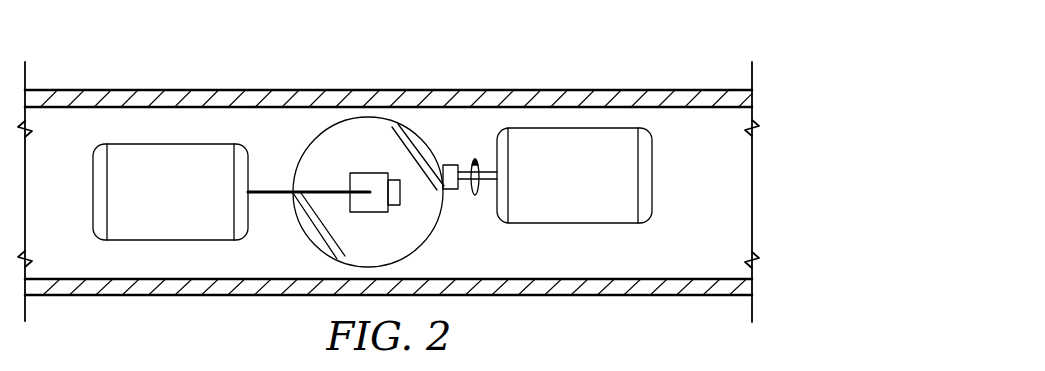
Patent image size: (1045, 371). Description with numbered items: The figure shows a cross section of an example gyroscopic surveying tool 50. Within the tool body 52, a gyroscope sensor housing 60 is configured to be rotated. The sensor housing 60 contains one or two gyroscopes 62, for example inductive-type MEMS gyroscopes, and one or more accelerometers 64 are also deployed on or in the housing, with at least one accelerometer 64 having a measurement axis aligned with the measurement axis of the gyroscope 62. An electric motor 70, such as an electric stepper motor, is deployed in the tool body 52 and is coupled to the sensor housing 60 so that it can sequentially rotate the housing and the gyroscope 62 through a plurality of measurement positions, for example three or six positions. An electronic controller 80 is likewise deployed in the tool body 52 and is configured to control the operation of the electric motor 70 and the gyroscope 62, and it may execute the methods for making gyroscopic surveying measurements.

The gyroscopic surveying tool 50 is at (388, 166).
The tool body 52 is at (124, 90).
The gyroscope sensor housing 60 is at (335, 144).
The gyroscope 62 is at (368, 213).
The accelerometer 64 is at (401, 197).
The electric motor 70 is at (558, 191).
The electronic controller 80 is at (156, 208).